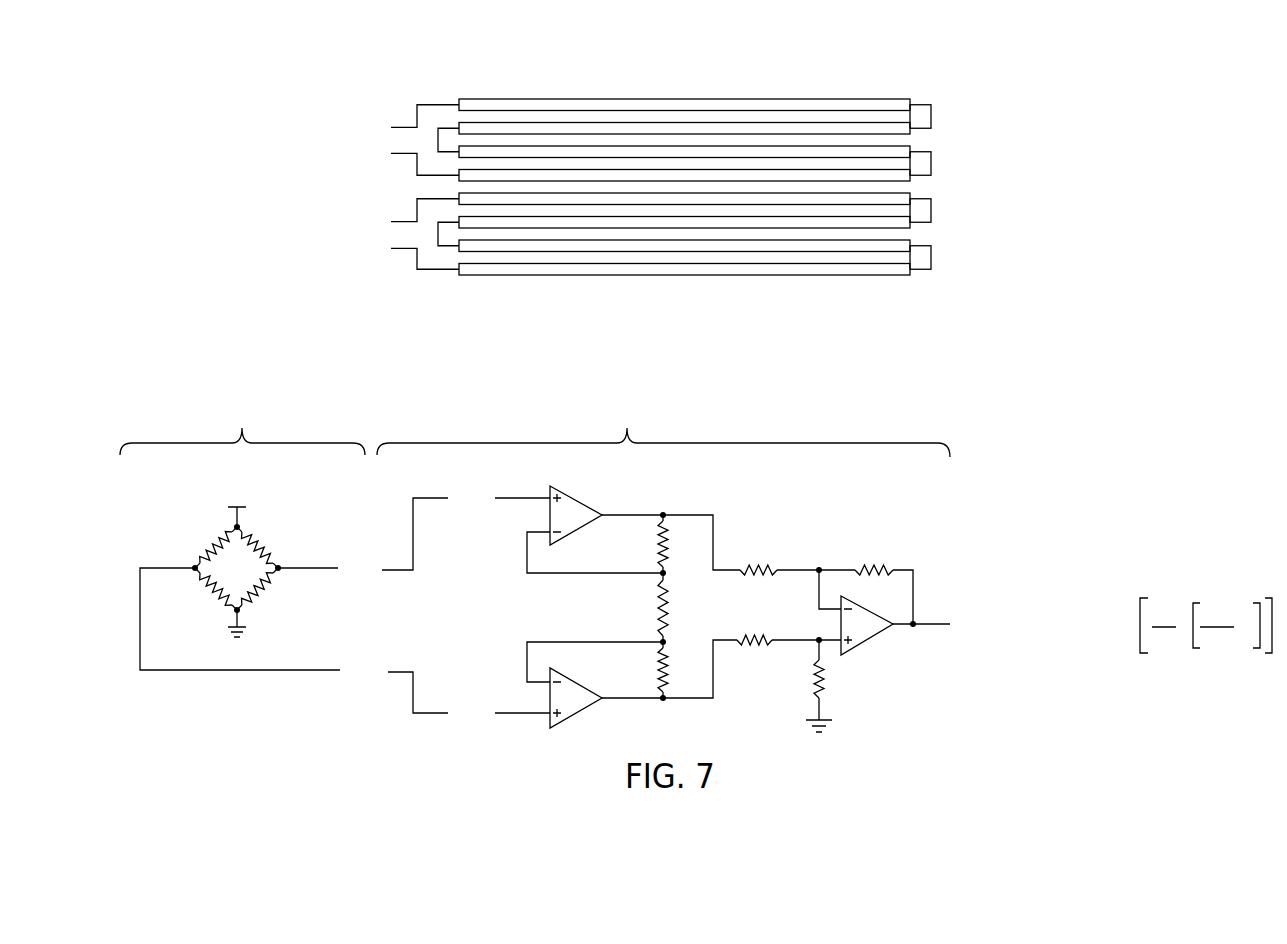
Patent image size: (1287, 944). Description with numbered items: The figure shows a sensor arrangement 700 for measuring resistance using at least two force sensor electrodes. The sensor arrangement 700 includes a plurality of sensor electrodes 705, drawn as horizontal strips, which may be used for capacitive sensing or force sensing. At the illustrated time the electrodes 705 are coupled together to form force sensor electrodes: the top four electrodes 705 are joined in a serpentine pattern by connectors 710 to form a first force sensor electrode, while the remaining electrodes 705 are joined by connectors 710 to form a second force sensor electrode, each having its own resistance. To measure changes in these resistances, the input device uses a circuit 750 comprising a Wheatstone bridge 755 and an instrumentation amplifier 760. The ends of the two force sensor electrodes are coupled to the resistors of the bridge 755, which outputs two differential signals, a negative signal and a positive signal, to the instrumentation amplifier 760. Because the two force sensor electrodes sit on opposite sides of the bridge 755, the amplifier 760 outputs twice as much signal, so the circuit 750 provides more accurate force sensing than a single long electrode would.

The sensor arrangement 700 is at (372, 45).
The sensor electrodes 705 is at (860, 98).
The connectors 710 is at (438, 143).
The circuit 750 is at (160, 357).
The Wheatstone bridge 755 is at (251, 539).
The instrumentation amplifier 760 is at (824, 564).